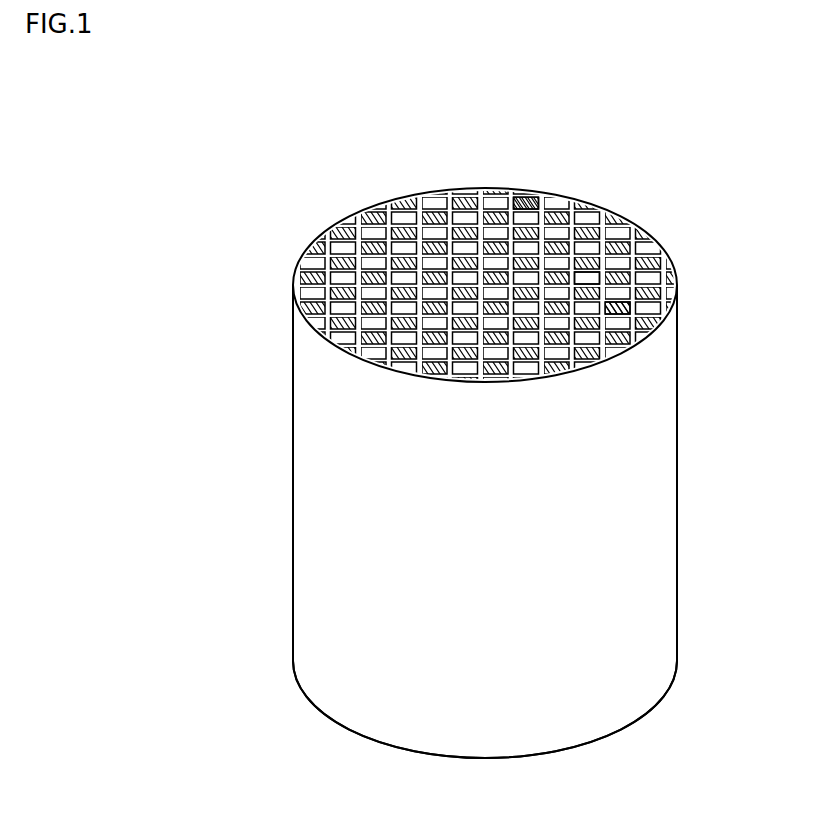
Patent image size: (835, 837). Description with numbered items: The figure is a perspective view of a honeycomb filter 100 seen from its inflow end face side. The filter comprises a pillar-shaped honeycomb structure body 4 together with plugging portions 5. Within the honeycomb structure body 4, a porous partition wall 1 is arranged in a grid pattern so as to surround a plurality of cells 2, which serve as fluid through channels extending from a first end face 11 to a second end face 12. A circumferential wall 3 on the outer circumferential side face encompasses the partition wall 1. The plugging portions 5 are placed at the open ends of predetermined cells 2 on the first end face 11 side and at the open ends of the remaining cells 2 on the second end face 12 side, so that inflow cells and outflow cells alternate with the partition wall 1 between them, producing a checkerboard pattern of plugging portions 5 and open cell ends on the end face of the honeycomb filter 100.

The honeycomb filter 100 is at (806, 143).
The partition wall 1 is at (574, 232).
The cells 2 is at (588, 277).
The circumferential wall 3 is at (645, 417).
The honeycomb structure body 4 is at (688, 325).
The plugging portions 5 is at (512, 208).
The first end face 11 is at (367, 210).
The second end face 12 is at (315, 720).